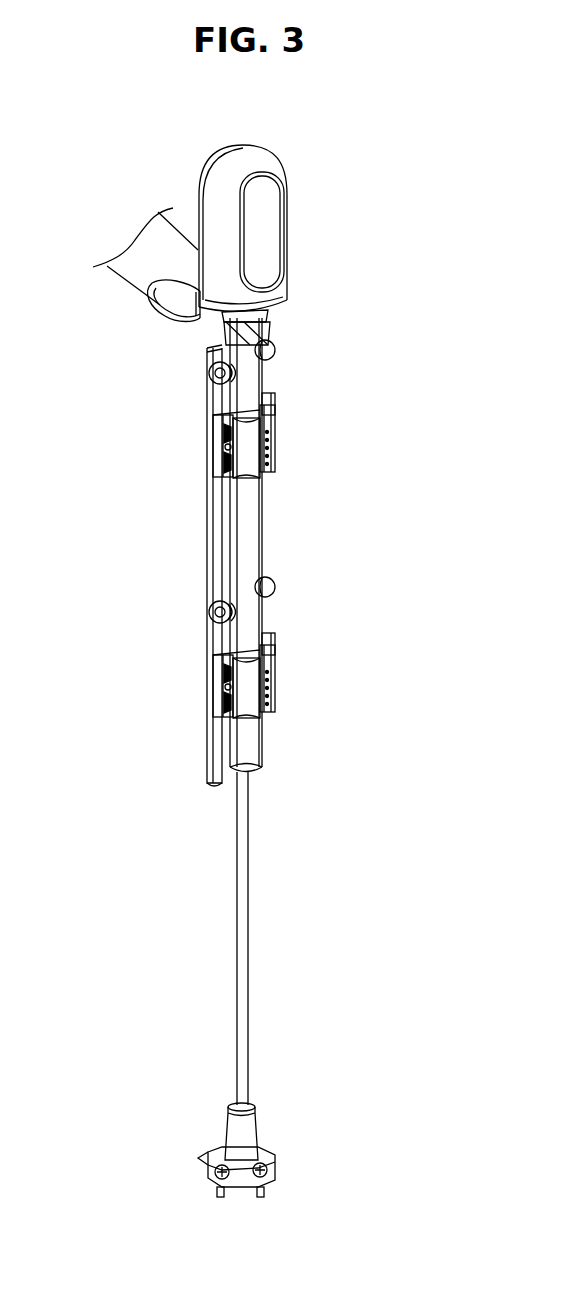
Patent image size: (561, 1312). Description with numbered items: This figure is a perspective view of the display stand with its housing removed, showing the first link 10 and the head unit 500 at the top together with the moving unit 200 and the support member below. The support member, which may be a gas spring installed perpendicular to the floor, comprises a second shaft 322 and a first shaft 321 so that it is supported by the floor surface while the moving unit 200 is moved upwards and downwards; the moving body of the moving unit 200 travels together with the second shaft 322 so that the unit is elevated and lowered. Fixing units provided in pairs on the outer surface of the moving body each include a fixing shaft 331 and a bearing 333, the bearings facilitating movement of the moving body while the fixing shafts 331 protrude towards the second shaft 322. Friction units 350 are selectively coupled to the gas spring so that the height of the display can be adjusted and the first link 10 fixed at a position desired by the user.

The first link 10 is at (125, 280).
The head unit 500 is at (317, 206).
The moving unit 200 is at (192, 524).
The second shaft 322 is at (255, 540).
The first shaft 321 is at (247, 945).
The fixing shaft 331 is at (208, 616).
The bearing 333 is at (272, 354).
The friction unit 350 is at (294, 436).